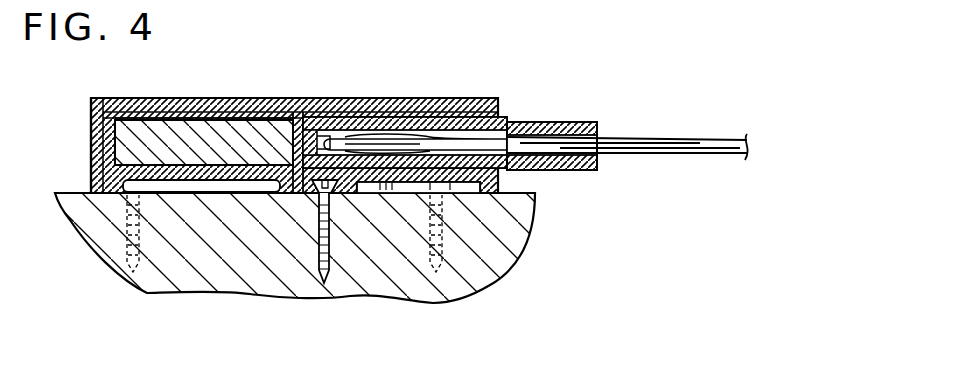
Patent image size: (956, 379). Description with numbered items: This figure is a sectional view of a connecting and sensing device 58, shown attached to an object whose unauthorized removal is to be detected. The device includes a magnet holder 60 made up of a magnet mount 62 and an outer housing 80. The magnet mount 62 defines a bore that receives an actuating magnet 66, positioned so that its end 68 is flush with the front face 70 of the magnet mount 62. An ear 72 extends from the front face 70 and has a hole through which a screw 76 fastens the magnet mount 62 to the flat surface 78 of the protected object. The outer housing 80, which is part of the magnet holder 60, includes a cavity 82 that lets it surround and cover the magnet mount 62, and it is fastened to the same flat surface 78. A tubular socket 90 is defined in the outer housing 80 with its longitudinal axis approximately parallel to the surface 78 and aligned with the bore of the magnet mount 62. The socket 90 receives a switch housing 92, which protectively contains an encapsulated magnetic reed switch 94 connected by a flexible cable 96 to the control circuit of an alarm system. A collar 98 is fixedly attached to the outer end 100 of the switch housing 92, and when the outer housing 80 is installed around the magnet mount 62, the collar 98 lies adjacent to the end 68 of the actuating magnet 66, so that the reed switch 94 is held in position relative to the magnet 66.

The connecting and sensing device 58 is at (500, 88).
The magnet holder 60 is at (193, 99).
The magnet mount 62 is at (258, 118).
The actuating magnet 66 is at (167, 130).
The end 68 is at (308, 130).
The front face 70 is at (296, 112).
The ear 72 is at (362, 193).
The screw 76 is at (318, 200).
The flat surface 78 is at (510, 190).
The outer housing 80 is at (91, 137).
The cavity 82 is at (117, 193).
The tubular socket 90 is at (500, 118).
The switch housing 92 is at (570, 168).
The encapsulated magnetic reed switch 94 is at (437, 137).
The flexible cable 96 is at (702, 153).
The collar 98 is at (332, 132).
The outer end 100 is at (233, 116).